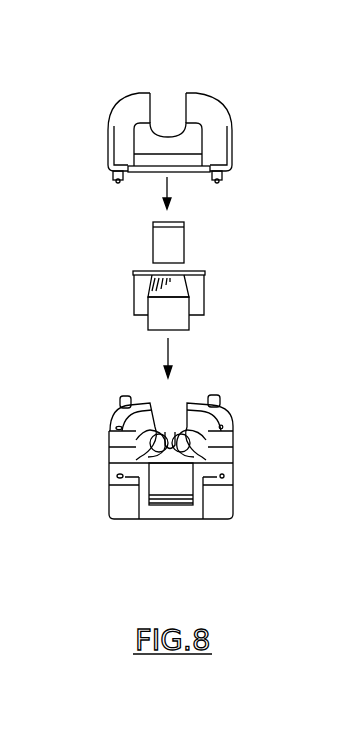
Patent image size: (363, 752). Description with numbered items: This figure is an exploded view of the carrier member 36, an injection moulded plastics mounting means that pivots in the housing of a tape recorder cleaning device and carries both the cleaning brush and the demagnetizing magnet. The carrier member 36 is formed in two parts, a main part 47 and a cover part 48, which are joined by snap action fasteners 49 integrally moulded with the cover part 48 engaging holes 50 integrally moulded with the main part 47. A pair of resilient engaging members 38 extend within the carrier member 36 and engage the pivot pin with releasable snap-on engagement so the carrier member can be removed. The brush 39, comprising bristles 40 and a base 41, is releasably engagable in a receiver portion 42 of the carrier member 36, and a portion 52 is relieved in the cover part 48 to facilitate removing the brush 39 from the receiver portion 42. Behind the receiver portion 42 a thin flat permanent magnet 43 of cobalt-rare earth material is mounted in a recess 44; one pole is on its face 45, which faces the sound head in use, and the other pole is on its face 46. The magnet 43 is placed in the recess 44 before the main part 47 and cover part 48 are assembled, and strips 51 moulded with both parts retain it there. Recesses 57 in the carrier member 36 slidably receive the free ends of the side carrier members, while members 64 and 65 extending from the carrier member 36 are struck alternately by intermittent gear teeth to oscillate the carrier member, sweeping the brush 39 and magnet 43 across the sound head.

The carrier member 36 is at (251, 122).
The cover part 48 is at (197, 100).
The snap action fasteners 49 is at (113, 183).
The relieved portion 52 is at (143, 172).
The permanent magnet 43 is at (177, 240).
The face 46 is at (163, 222).
The face 45 is at (163, 245).
The bristles 40 is at (200, 286).
The base 41 is at (182, 322).
The brush 39 is at (157, 313).
The main part 47 is at (223, 507).
The member 65 is at (122, 400).
The member 64 is at (223, 393).
The resilient engaging members 38 is at (173, 431).
The holes 50 is at (117, 427).
The recesses 57 is at (117, 457).
The receiver portion 42 is at (139, 506).
The recess 44 is at (163, 500).
The strips 51 is at (177, 506).